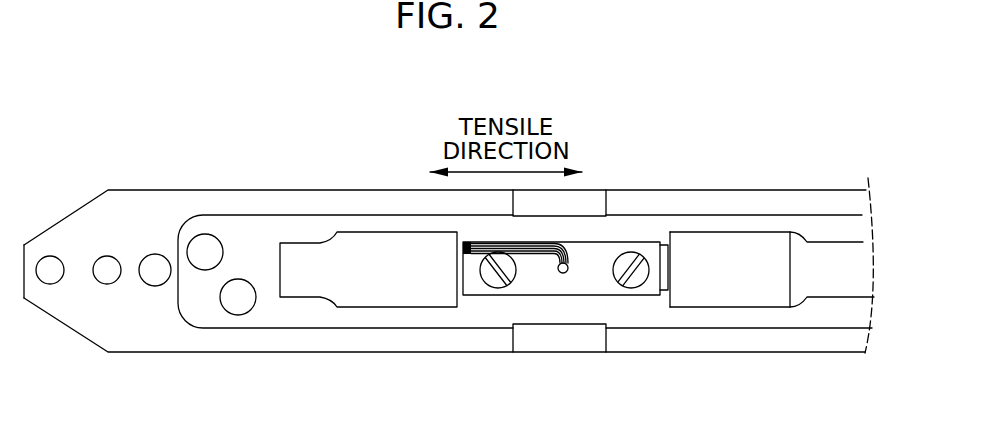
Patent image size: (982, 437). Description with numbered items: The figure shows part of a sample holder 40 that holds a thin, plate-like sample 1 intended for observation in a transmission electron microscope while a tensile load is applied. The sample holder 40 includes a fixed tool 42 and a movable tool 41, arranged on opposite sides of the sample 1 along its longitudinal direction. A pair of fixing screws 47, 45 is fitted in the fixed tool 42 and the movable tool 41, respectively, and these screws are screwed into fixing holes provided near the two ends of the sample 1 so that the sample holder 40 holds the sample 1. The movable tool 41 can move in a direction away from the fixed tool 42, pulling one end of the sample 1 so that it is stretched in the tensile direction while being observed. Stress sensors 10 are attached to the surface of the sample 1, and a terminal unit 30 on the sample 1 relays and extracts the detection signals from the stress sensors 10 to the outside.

The sample holder 40 is at (617, 92).
The sample 1 is at (613, 232).
The terminal unit 30 is at (501, 236).
The stress sensor 10 is at (572, 263).
The fixed tool 42 is at (398, 292).
The movable tool 41 is at (732, 292).
The fixing screw 47 is at (490, 288).
The fixing screw 45 is at (633, 288).